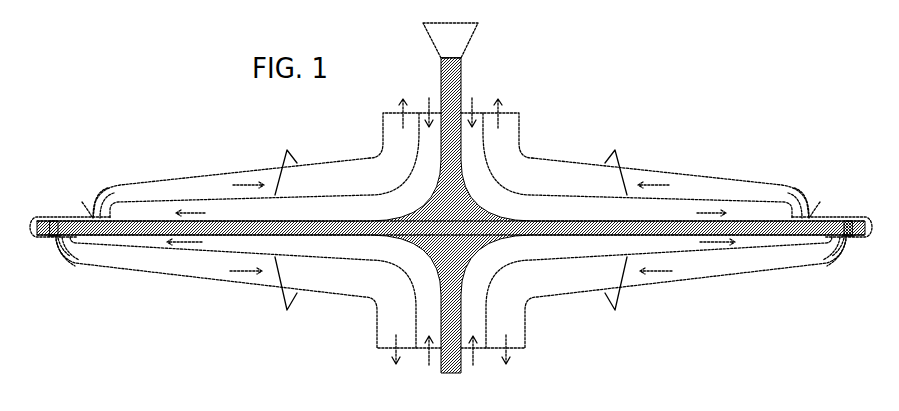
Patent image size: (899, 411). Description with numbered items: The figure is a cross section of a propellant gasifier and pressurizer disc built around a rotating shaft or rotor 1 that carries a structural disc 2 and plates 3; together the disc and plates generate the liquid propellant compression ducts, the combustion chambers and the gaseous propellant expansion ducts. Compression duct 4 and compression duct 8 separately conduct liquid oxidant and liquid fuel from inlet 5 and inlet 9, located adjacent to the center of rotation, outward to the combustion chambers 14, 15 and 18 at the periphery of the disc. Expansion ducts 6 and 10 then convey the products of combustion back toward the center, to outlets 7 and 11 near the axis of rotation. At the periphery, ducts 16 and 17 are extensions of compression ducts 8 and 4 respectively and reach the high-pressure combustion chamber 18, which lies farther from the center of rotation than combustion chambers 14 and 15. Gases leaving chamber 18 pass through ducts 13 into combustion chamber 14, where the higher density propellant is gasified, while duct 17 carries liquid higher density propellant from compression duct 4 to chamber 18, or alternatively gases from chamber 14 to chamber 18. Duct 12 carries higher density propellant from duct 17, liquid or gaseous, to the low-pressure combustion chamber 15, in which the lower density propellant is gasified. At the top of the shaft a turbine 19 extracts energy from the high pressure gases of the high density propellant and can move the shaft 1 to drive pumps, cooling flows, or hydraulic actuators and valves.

The rotating shaft or rotor 1 is at (462, 83).
The structural disc 2 is at (242, 220).
The plates 3 is at (451, 230).
The compression duct 4 is at (420, 173).
The inlet 5 is at (428, 112).
The expansion duct 6 is at (347, 178).
The outlet 7 is at (398, 108).
The compression duct 8 is at (406, 268).
The inlet 9 is at (430, 350).
The expansion duct 10 is at (220, 268).
The outlet 11 is at (396, 348).
The duct 12 is at (57, 240).
The ducts 13 is at (86, 214).
The combustion chamber 14 is at (107, 207).
The low-pressure combustion chamber 15 is at (78, 247).
The duct 16 is at (50, 237).
The duct 17 is at (53, 221).
The high-pressure combustion chamber 18 is at (32, 219).
The turbine 19 is at (445, 43).